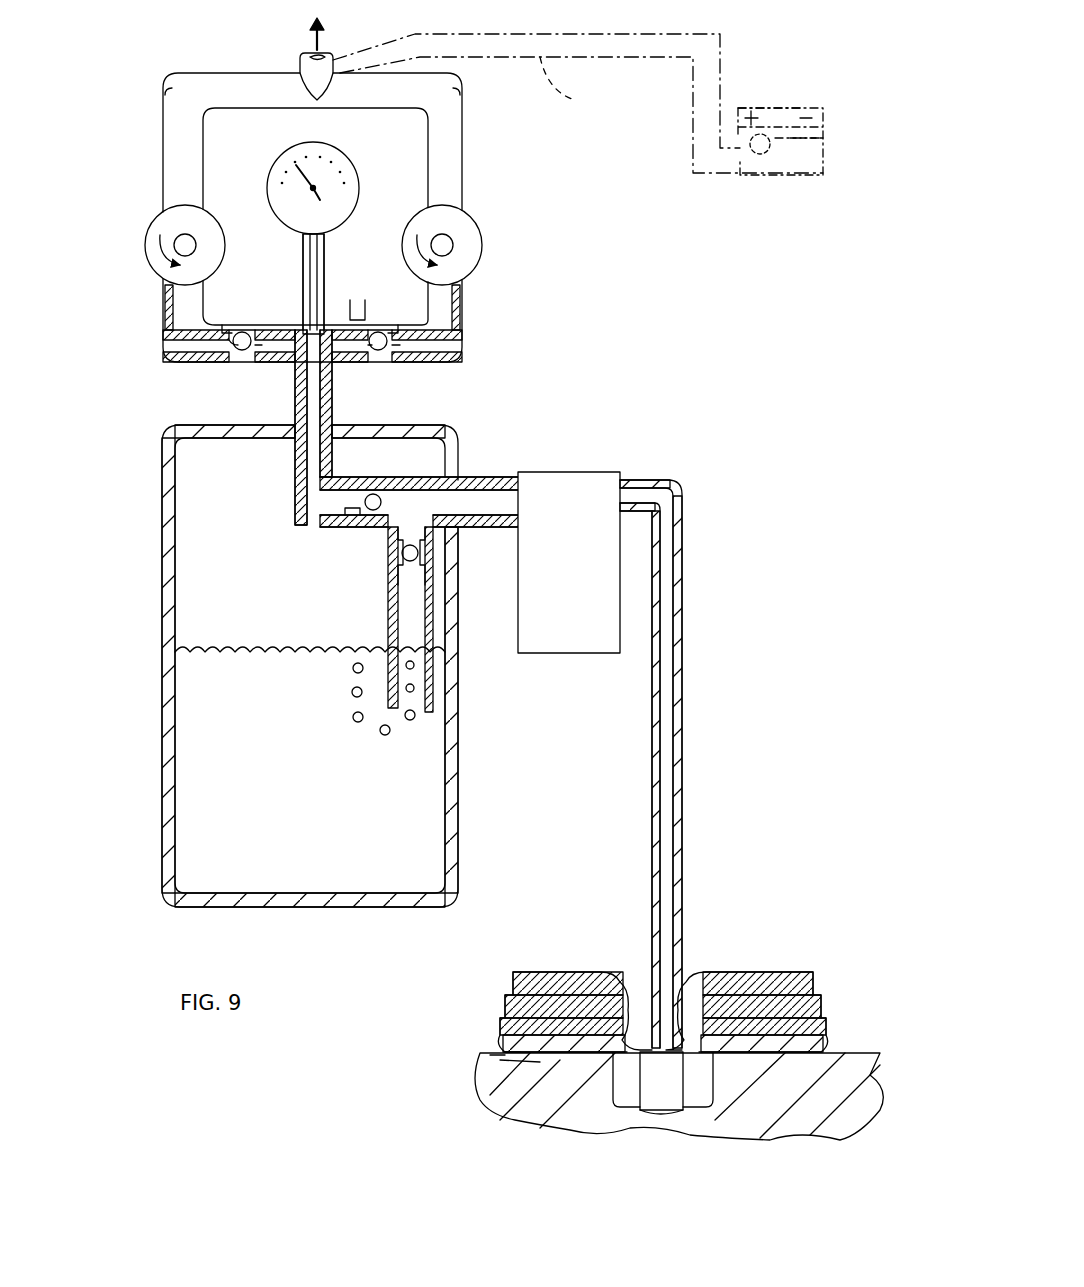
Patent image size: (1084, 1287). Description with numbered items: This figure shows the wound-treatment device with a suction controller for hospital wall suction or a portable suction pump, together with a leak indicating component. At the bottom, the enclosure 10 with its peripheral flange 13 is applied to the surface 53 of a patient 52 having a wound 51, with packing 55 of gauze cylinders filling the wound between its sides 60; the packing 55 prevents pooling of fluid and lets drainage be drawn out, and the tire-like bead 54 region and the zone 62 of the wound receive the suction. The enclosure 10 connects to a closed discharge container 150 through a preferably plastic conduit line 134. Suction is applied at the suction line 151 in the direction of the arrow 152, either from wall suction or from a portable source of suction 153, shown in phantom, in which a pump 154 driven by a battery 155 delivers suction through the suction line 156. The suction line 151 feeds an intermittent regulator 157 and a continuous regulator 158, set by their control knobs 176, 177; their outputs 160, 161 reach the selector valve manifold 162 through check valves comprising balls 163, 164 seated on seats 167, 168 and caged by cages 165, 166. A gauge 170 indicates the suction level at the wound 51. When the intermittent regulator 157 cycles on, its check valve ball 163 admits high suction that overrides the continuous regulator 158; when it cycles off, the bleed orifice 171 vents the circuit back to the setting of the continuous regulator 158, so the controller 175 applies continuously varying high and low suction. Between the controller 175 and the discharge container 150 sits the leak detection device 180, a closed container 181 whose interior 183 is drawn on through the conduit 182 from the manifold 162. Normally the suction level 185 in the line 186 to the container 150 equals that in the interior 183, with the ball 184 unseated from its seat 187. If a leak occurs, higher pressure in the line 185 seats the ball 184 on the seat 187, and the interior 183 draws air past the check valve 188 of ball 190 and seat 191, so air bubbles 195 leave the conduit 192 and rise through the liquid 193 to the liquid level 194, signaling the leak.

The enclosure 10 is at (677, 992).
The peripheral flange 13 is at (812, 1045).
The wound 51 is at (530, 1078).
The patient 52 is at (810, 1100).
The surface 53 is at (685, 1083).
The tire bead 54 is at (510, 1048).
The packing 55 is at (652, 1112).
The sides of the wound 60 is at (613, 1095).
The zone of the wound 62 is at (492, 1058).
The conduit line 134 is at (680, 850).
The discharge container 150 is at (598, 485).
The suction line 151 is at (300, 62).
The arrow 152 is at (305, 45).
The portable source of suction 153 is at (820, 150).
The pump 154 is at (825, 130).
The battery 155 is at (778, 110).
The suction line 156 is at (575, 104).
The intermittent regulator 157 is at (205, 218).
The continuous regulator 158 is at (465, 232).
The output of intermittent regulator 160 is at (165, 318).
The output of continuous regulator 161 is at (466, 303).
The selector valve manifold 162 is at (315, 330).
The check valve ball 163 is at (240, 352).
The check valve ball 164 is at (384, 350).
The cage 165 is at (228, 333).
The cage 166 is at (406, 335).
The seat 167 is at (262, 355).
The seat 168 is at (380, 352).
The gauge 170 is at (335, 170).
The bleed orifice 171 is at (348, 290).
The controller 175 is at (462, 163).
The control knob 176 is at (182, 234).
The control knob 177 is at (453, 245).
The leak detection device 180 is at (452, 424).
The closed container 181 is at (176, 560).
The conduit 182 is at (295, 455).
The interior 183 is at (275, 578).
The ball 184 is at (375, 494).
The suction level line 185 is at (462, 500).
The line 186 is at (520, 470).
The seat 187 is at (355, 528).
The check valve 188 is at (397, 585).
The ball 190 is at (420, 560).
The seat 191 is at (418, 553).
The conduit 192 is at (434, 685).
The liquid 193 is at (332, 811).
The liquid level 194 is at (250, 648).
The air bubbles 195 is at (350, 700).